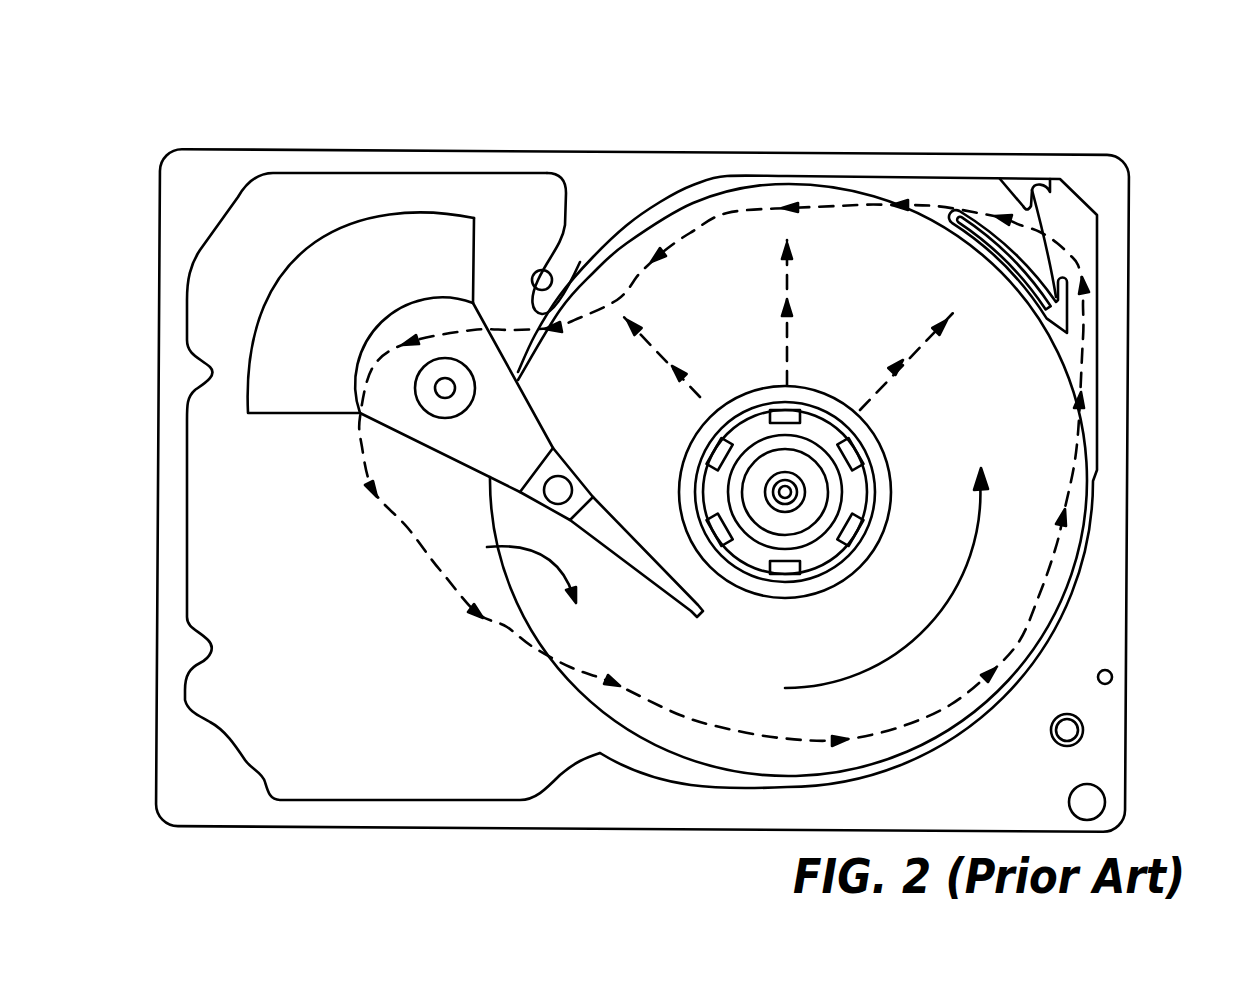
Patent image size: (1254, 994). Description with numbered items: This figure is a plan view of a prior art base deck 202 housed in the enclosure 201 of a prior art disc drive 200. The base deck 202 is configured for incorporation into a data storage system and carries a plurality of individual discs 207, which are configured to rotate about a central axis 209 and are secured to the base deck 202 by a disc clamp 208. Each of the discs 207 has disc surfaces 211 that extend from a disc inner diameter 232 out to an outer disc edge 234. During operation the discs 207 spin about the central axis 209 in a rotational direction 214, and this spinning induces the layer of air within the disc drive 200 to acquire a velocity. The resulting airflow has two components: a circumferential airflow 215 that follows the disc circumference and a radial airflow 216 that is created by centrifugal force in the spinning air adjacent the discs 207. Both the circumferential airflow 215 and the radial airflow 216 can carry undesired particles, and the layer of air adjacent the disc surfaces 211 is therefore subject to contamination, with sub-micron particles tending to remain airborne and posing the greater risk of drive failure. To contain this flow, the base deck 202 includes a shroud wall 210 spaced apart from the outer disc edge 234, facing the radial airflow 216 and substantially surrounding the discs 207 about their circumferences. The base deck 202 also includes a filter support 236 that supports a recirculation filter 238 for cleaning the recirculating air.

The disc drive 200 is at (985, 102).
The enclosure 201 is at (1122, 662).
The base deck 202 is at (1103, 648).
The discs 207 is at (538, 528).
The disc clamp 208 is at (853, 495).
The central axis 209 is at (785, 497).
The shroud wall 210 is at (627, 217).
The disc surfaces 211 is at (512, 568).
The rotational direction 214 is at (958, 588).
The circumferential airflow 215 is at (510, 630).
The radial airflow 216 is at (700, 390).
The disc inner diameter 232 is at (683, 462).
The outer disc edge 234 is at (590, 700).
The filter support 236 is at (1060, 313).
The recirculation filter 238 is at (1043, 230).